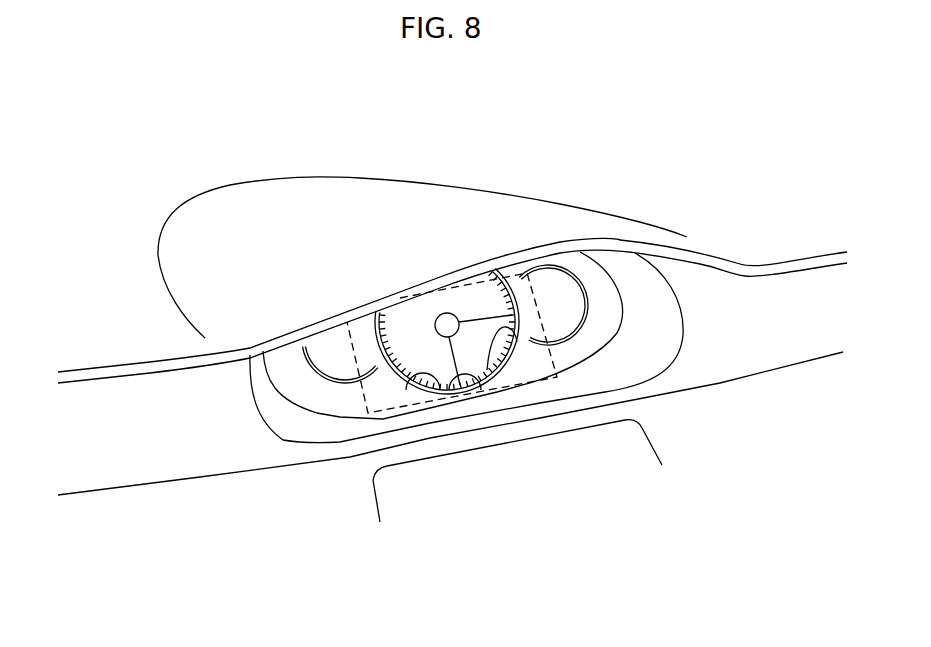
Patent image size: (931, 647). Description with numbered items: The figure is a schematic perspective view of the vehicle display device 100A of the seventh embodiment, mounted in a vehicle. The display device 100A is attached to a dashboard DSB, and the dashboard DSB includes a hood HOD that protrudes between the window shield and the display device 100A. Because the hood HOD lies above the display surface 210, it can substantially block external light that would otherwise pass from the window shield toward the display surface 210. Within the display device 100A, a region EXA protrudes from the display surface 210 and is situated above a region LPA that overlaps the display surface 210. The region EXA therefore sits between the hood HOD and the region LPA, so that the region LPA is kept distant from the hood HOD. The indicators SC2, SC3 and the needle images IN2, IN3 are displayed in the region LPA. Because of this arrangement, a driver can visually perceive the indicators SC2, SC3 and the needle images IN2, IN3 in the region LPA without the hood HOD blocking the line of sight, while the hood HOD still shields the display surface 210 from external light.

The hood HOD is at (370, 197).
The region protruding from the display surface EXA is at (487, 280).
The needle image IN3 is at (490, 305).
The dashboard DSB is at (768, 243).
The display device 100A is at (645, 348).
The display surface 210 is at (573, 428).
The indicator SC2 is at (433, 378).
The needle image IN2 is at (467, 376).
The region overlapping the display surface LPA is at (482, 368).
The indicator SC3 is at (490, 355).